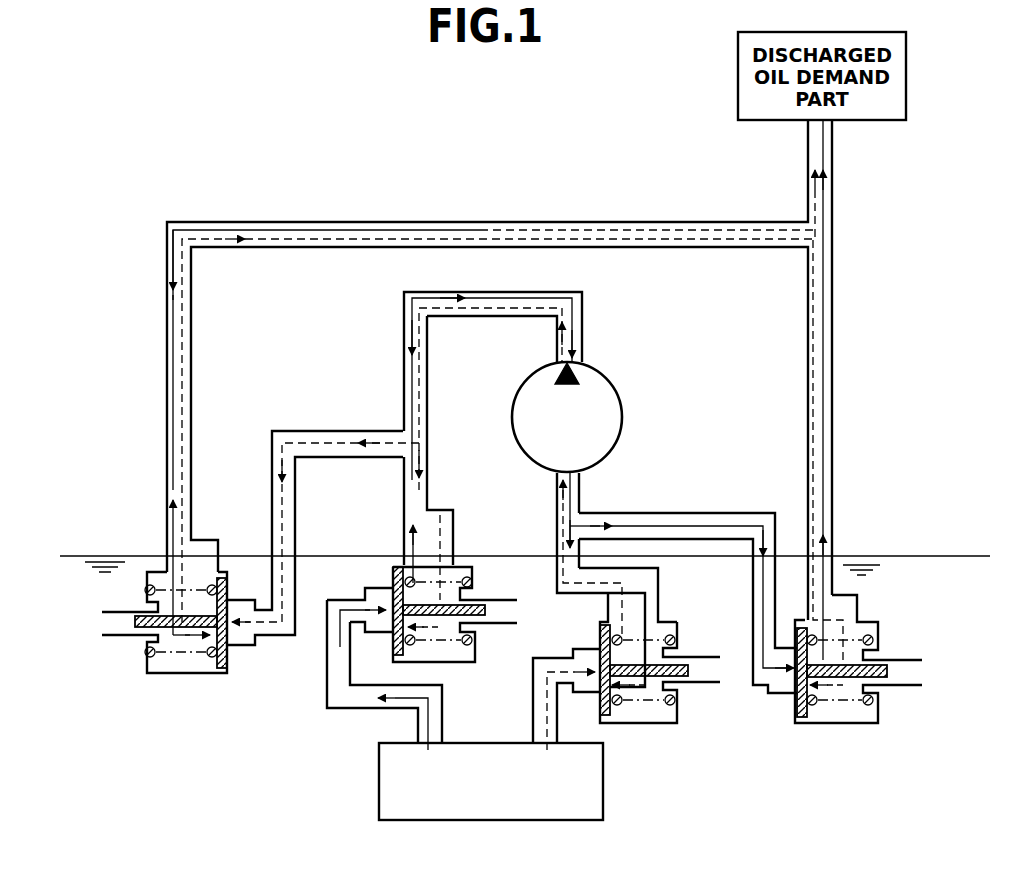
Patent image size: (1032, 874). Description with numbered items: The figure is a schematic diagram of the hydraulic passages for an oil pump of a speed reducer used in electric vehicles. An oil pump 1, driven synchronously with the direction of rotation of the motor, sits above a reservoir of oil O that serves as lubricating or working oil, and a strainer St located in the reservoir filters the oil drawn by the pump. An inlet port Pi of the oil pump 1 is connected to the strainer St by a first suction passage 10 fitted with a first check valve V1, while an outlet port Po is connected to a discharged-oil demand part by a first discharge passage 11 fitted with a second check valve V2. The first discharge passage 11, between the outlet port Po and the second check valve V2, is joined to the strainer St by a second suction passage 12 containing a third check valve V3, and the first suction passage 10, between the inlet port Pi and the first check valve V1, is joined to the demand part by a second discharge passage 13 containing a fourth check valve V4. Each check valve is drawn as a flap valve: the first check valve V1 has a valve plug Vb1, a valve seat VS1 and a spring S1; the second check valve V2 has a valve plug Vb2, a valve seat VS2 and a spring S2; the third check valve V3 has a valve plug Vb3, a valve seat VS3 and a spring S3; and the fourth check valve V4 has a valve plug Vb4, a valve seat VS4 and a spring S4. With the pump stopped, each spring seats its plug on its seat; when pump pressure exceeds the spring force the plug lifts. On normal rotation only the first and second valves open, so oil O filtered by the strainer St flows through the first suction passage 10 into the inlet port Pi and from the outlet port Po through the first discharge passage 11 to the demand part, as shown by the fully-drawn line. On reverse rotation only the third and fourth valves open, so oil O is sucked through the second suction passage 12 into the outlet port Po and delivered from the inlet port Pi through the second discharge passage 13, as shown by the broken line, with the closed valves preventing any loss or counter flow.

The oil pump 1 is at (622, 412).
The inlet port Pi is at (557, 362).
The outlet port Po is at (638, 570).
The first suction passage 10 is at (428, 472).
The first discharge passage 11 is at (580, 490).
The second suction passage 12 is at (557, 585).
The second discharge passage 13 is at (340, 430).
The oil O is at (862, 556).
The strainer St is at (465, 710).
The first check valve V1 is at (455, 670).
The valve plug of first check valve Vb1 is at (472, 610).
The valve seat of first check valve VS1 is at (397, 563).
The spring of first check valve S1 is at (450, 648).
The second check valve V2 is at (855, 725).
The valve plug of second check valve Vb2 is at (877, 660).
The valve seat of second check valve VS2 is at (800, 723).
The spring of second check valve S2 is at (850, 707).
The third check valve V3 is at (660, 725).
The valve plug of third check valve Vb3 is at (688, 668).
The valve seat of third check valve VS3 is at (602, 718).
The spring of third check valve S3 is at (658, 637).
The fourth check valve V4 is at (133, 663).
The valve plug of fourth check valve Vb4 is at (150, 615).
The valve seat of fourth check valve VS4 is at (212, 665).
The spring of fourth check valve S4 is at (167, 655).